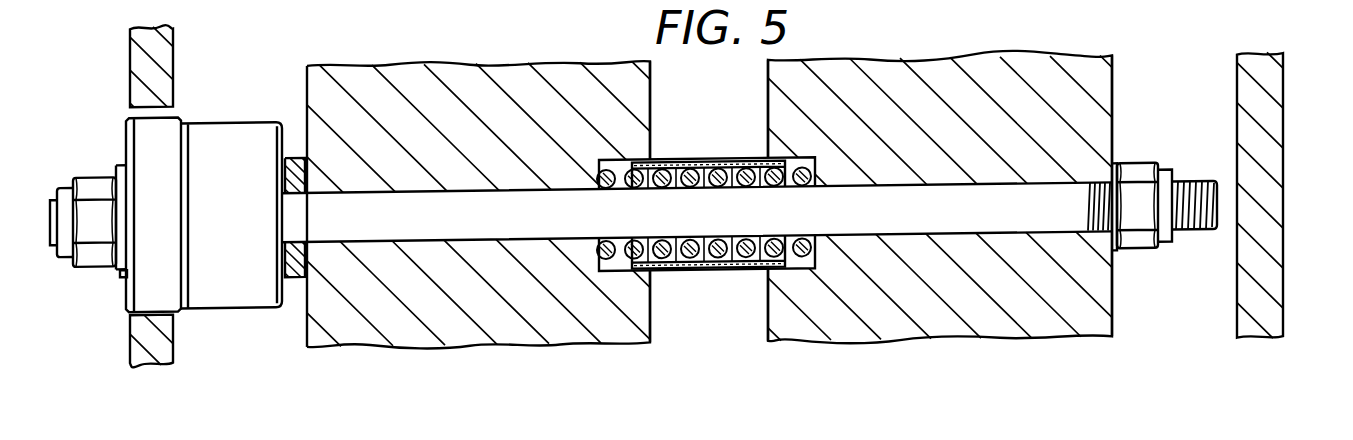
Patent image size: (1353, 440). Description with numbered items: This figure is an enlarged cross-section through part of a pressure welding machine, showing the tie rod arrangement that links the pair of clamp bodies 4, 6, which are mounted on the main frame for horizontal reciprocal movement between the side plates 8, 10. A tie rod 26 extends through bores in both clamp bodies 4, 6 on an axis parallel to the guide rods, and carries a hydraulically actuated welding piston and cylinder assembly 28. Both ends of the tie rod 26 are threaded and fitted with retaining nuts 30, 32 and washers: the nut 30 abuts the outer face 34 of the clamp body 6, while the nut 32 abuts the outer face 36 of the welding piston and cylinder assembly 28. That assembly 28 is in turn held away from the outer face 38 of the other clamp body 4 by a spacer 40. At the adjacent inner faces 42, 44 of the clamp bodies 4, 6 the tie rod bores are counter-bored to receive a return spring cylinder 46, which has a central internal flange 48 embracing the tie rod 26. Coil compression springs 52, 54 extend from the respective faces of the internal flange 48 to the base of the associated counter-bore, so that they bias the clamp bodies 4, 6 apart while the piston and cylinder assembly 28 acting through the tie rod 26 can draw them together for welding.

The clamp body 4 is at (472, 321).
The clamp body 6 is at (940, 326).
The side plate 8 is at (135, 53).
The side plate 10 is at (1270, 123).
The tie rod 26 is at (1046, 193).
The welding piston and cylinder assembly 28 is at (222, 132).
The retaining nut 30 is at (1142, 238).
The retaining nut 32 is at (92, 179).
The outer face of clamp body 6 34 is at (1112, 93).
The outer face of welding piston and cylinder assembly 36 is at (120, 266).
The outer face of clamp body 4 38 is at (307, 75).
The spacer 40 is at (292, 274).
The inner face of clamp body 4 42 is at (655, 323).
The inner face of clamp body 6 44 is at (767, 318).
The return spring cylinder 46 is at (680, 267).
The central internal flange 48 is at (713, 267).
The coil compression spring 52 is at (680, 160).
The coil compression spring 54 is at (743, 161).